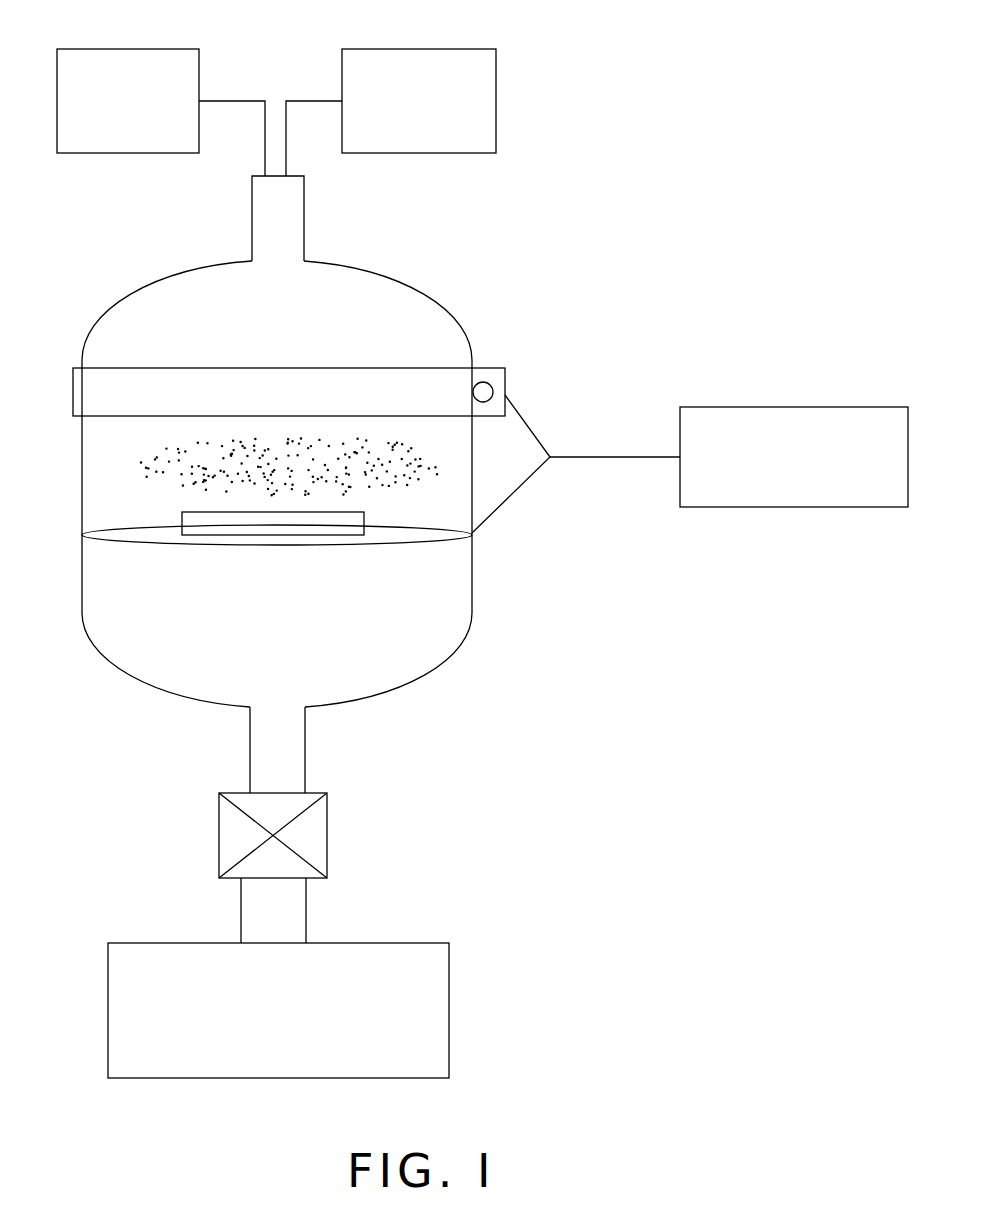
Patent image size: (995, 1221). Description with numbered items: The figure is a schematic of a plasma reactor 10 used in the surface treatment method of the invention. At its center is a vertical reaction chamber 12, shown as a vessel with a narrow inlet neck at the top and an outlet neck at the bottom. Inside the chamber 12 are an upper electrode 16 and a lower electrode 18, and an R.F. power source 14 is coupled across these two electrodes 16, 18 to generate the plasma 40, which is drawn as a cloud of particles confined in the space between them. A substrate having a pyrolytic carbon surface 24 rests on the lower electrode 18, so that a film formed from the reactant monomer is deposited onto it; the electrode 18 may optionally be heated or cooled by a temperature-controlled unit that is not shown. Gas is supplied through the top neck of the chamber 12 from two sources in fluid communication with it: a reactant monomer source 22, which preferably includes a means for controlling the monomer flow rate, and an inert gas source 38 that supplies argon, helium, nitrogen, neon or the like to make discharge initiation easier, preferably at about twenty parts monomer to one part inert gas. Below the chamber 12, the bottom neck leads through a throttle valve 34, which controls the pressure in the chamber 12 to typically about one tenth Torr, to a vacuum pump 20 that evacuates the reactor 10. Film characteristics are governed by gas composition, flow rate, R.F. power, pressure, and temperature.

The plasma reactor 10 is at (601, 208).
The vertical reaction chamber 12 is at (372, 264).
The R.F. power source 14 is at (776, 407).
The upper electrode 16 is at (428, 368).
The lower electrode 18 is at (430, 543).
The vacuum pump 20 is at (449, 1005).
The reactant monomer source 22 is at (148, 49).
The pyrolytic carbon surface 24 is at (216, 537).
The throttle valve 34 is at (327, 825).
The inert gas source 38 is at (462, 49).
The plasma 40 is at (142, 473).